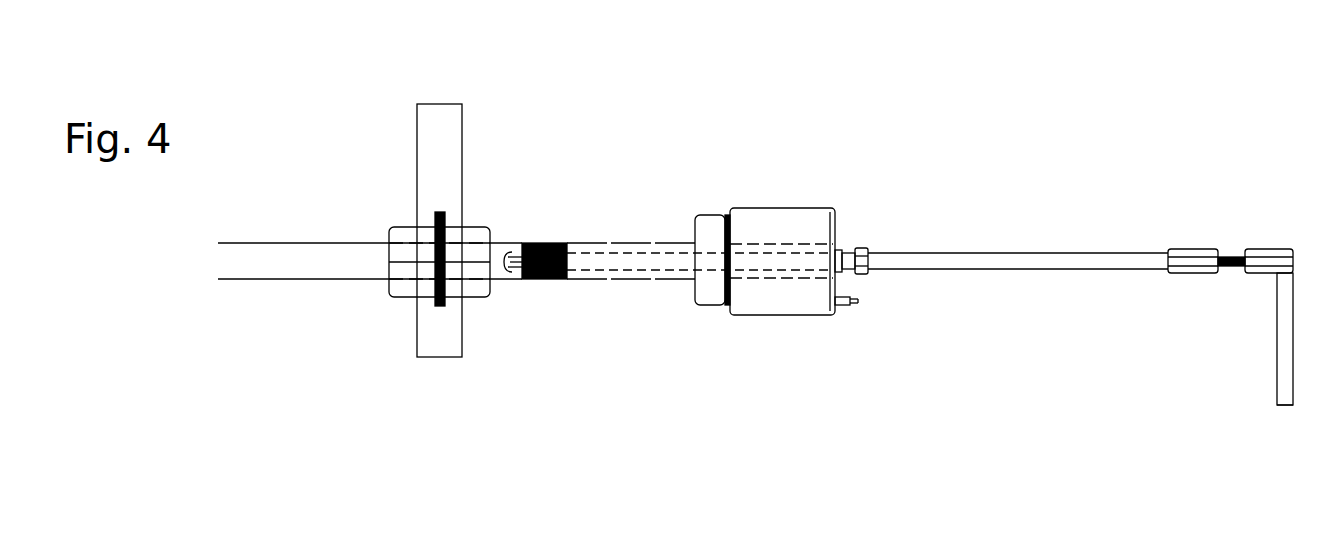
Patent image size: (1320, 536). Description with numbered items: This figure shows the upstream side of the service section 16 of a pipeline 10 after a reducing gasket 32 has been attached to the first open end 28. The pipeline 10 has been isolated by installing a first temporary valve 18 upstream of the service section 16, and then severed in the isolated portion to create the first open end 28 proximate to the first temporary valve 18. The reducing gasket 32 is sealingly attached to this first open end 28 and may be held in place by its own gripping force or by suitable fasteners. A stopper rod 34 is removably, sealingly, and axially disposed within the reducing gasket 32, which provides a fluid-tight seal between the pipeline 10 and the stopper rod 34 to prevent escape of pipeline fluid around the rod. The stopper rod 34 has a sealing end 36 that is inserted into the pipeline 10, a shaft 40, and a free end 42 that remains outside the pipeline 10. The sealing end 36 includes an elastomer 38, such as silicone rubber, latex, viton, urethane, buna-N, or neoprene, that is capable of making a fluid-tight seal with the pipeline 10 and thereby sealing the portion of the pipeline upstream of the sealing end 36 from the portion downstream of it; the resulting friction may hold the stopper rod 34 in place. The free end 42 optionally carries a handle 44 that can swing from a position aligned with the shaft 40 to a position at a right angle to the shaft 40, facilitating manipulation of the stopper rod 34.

The pipeline 10 is at (259, 243).
The first temporary valve 18 is at (462, 133).
The sealing end 36 is at (548, 243).
The elastomer 38 is at (535, 280).
The reducing gasket 32 is at (770, 208).
The first open end 28 is at (837, 243).
The shaft 40 is at (962, 250).
The stopper rod 34 is at (1087, 242).
The handle 44 is at (1275, 335).
The free end 42 is at (1288, 407).
The service section 16 is at (780, 342).